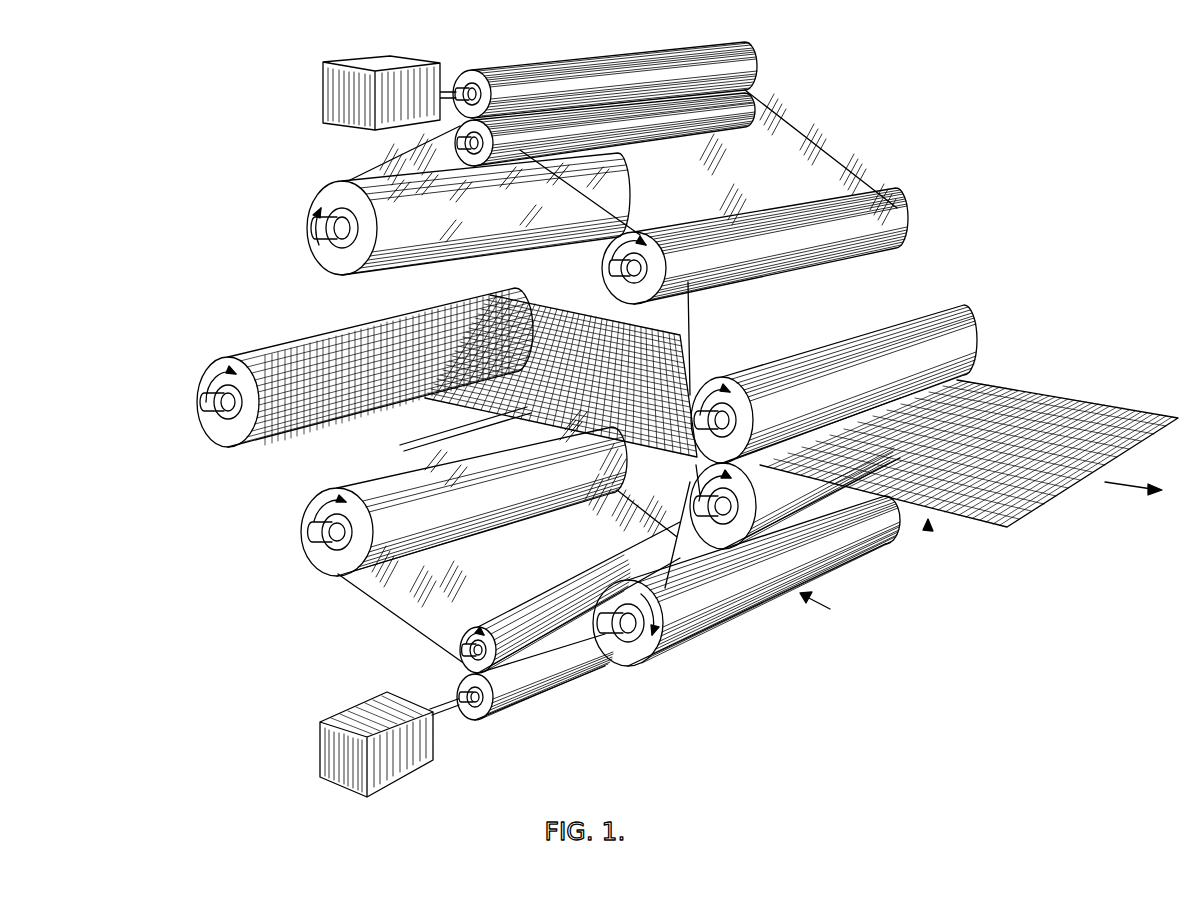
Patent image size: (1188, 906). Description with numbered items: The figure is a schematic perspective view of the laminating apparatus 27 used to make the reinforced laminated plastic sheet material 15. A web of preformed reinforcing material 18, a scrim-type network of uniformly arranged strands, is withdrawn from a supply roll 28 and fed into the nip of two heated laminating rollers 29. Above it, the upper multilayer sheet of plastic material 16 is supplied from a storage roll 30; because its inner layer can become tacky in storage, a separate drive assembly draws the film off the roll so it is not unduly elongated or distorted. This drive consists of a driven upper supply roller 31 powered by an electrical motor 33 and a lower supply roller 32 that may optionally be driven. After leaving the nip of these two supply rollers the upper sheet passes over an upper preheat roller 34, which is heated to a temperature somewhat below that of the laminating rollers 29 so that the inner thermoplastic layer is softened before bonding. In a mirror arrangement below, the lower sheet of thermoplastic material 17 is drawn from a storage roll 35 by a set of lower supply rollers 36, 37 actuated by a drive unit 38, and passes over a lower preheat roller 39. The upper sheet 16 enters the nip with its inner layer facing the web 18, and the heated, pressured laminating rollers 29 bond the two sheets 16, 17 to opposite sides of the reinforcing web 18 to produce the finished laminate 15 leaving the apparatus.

The reinforced laminated plastic sheet material 15 is at (928, 522).
The upper sheet of plastic material 16 is at (794, 136).
The lower sheet of plastic material 17 is at (412, 621).
The web of reinforcing material 18 is at (450, 404).
The laminating apparatus 27 is at (824, 609).
The supply roll 28 is at (216, 372).
The laminating rollers 29 is at (964, 326).
The storage roll 30 is at (324, 206).
The upper supply roller 31 is at (747, 62).
The lower supply roller 32 is at (483, 162).
The electrical motor 33 is at (324, 66).
The upper preheat roller 34 is at (608, 254).
The storage roll 35 is at (320, 500).
The lower supply roller 36 is at (480, 718).
The lower supply roller 37 is at (465, 664).
The drive unit 38 is at (368, 712).
The lower preheat roller 39 is at (641, 666).